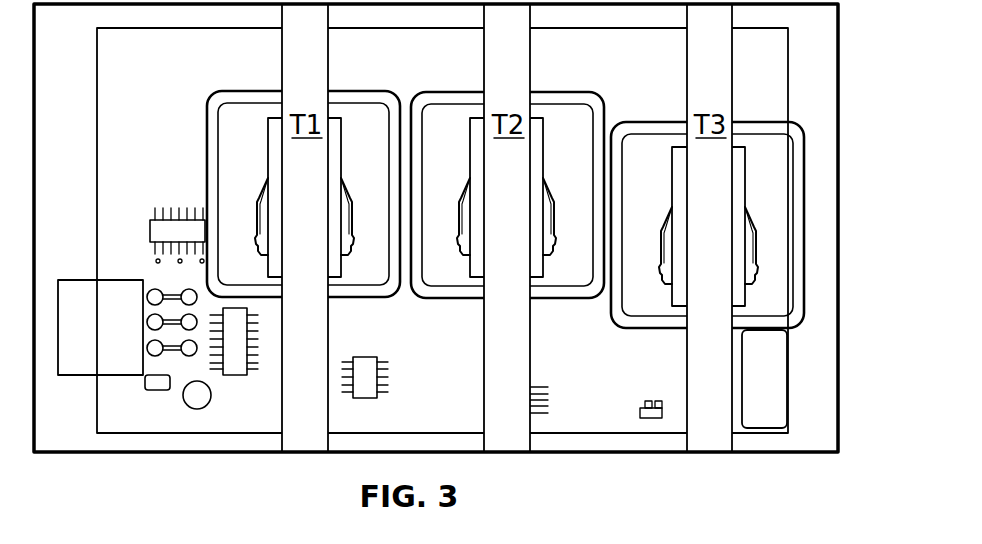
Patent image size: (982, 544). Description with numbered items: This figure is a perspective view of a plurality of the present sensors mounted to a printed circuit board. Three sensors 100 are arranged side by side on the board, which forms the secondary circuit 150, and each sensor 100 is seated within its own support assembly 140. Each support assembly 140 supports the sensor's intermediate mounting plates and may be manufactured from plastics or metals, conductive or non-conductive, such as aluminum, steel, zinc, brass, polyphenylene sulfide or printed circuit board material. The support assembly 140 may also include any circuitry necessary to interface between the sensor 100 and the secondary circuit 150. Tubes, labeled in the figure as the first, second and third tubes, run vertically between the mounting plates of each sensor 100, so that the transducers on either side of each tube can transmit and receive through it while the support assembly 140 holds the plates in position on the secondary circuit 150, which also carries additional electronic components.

The sensor 100 is at (255, 137).
The support assembly 140 is at (345, 118).
The secondary circuit 150 is at (178, 162).